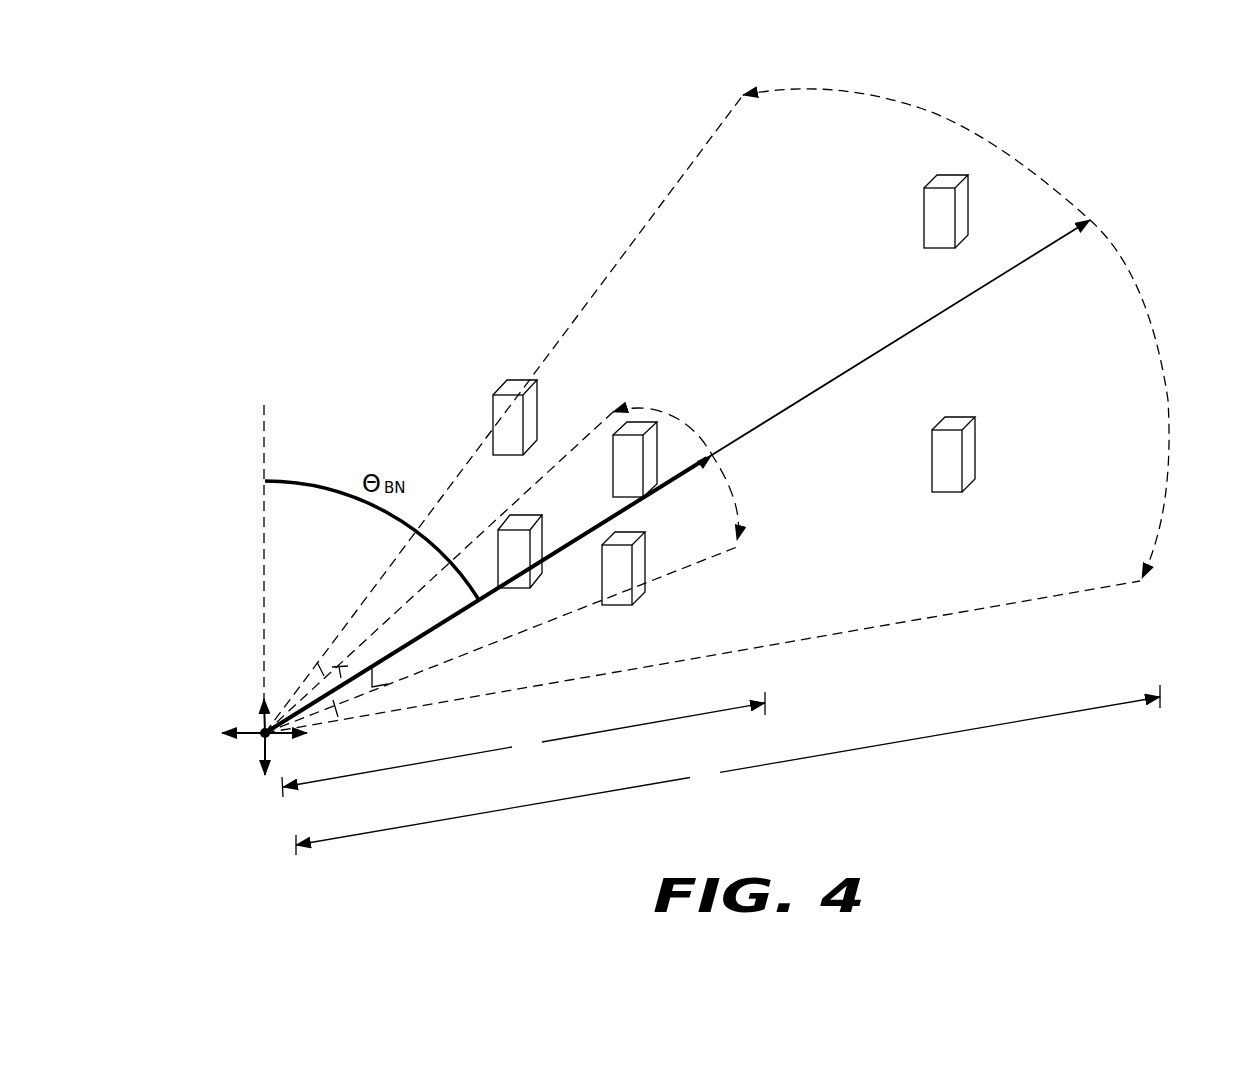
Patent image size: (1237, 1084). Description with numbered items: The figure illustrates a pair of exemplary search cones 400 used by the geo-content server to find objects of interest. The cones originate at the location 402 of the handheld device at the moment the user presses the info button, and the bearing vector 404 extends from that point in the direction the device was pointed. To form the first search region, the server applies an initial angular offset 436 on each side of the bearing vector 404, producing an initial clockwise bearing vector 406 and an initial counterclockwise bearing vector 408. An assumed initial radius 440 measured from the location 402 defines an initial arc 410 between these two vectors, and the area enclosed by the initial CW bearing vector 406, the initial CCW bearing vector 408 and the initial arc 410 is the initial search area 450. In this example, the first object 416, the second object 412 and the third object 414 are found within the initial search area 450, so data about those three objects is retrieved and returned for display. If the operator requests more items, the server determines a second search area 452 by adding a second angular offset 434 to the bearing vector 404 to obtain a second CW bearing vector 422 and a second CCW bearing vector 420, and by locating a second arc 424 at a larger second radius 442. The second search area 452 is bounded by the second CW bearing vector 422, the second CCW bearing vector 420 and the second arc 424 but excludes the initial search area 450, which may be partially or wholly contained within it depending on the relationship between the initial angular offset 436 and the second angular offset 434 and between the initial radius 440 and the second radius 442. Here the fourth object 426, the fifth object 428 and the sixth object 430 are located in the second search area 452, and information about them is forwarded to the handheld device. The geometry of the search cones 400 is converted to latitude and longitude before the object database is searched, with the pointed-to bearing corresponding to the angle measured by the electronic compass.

The search cones 400 is at (1146, 836).
The location 402 is at (258, 728).
The bearing vector 404 is at (585, 540).
The initial CW bearing vector 406 is at (548, 626).
The initial CCW bearing vector 408 is at (547, 476).
The initial arc 410 is at (738, 487).
The object 2 412 is at (640, 563).
The object 3 414 is at (608, 443).
The object 1 416 is at (540, 540).
The second CCW bearing vector 420 is at (612, 277).
The second CW bearing vector 422 is at (873, 630).
The second arc 424 is at (1037, 157).
The object 4 426 is at (537, 392).
The object 5 428 is at (973, 440).
The object 6 430 is at (960, 205).
The second angular offset 434 is at (377, 645).
The initial angular offset 436 is at (390, 644).
The initial radius R1 440 is at (413, 763).
The radius R2 442 is at (412, 826).
The initial search area 450 is at (718, 530).
The second search area 452 is at (967, 556).